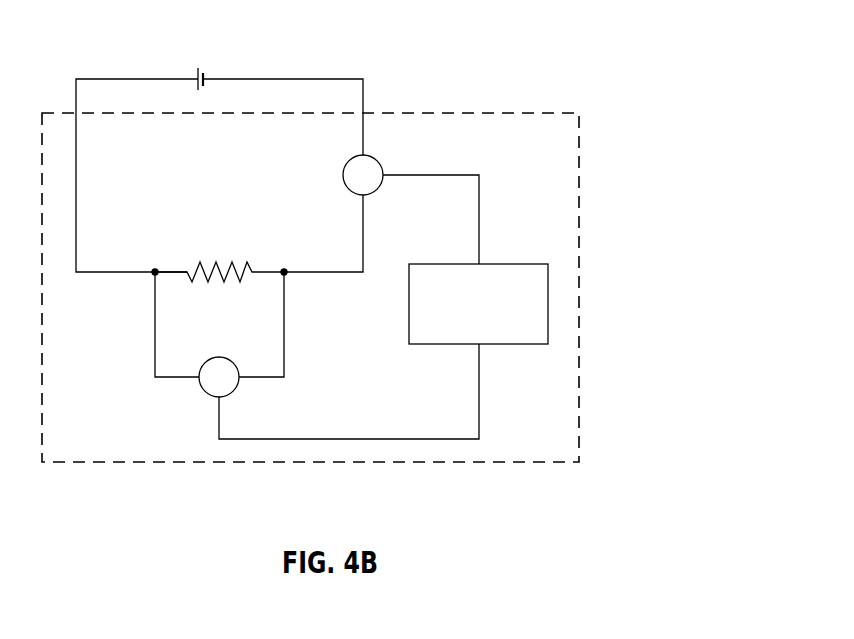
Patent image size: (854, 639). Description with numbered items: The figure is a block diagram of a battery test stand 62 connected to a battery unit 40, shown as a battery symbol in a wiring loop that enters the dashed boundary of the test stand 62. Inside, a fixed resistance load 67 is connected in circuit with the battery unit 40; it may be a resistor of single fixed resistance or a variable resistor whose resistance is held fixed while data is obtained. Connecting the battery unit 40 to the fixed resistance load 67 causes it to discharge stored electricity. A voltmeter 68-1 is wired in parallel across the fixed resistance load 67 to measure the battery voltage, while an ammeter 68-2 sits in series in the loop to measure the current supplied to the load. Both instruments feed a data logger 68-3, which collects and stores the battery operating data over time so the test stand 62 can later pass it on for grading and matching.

The battery unit 40 is at (197, 72).
The battery test stand 62 is at (472, 38).
The fixed resistance load 67 is at (208, 284).
The voltmeter 68-1 is at (206, 391).
The ammeter 68-2 is at (380, 160).
The data logger 68-3 is at (521, 264).